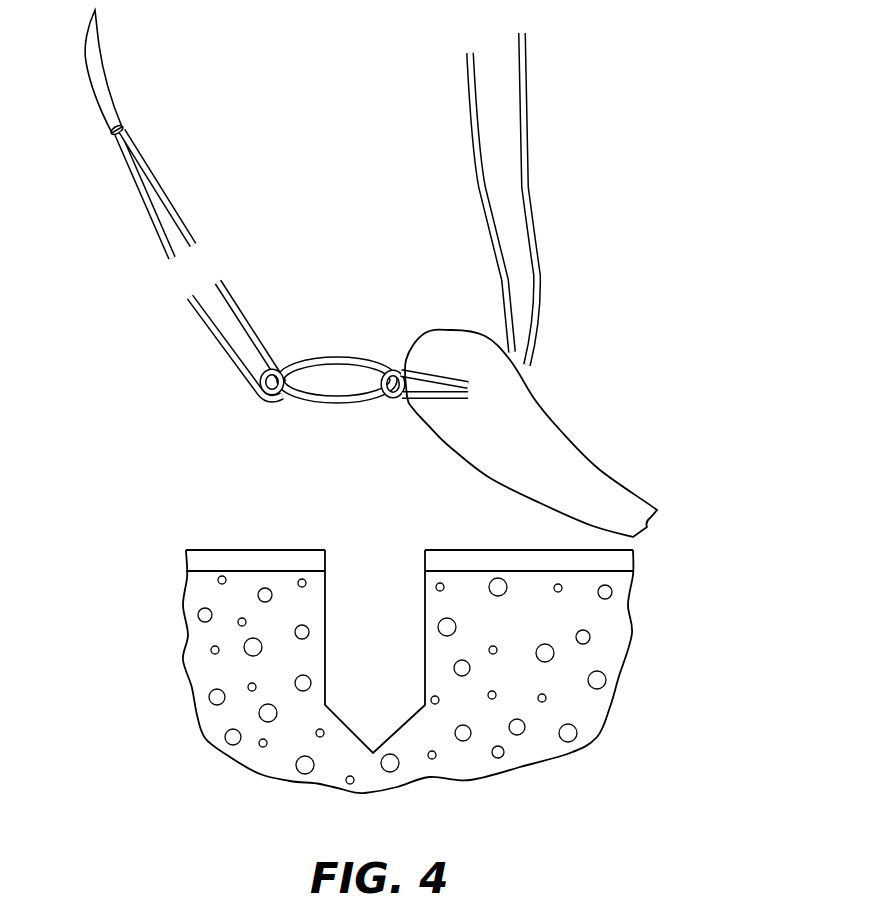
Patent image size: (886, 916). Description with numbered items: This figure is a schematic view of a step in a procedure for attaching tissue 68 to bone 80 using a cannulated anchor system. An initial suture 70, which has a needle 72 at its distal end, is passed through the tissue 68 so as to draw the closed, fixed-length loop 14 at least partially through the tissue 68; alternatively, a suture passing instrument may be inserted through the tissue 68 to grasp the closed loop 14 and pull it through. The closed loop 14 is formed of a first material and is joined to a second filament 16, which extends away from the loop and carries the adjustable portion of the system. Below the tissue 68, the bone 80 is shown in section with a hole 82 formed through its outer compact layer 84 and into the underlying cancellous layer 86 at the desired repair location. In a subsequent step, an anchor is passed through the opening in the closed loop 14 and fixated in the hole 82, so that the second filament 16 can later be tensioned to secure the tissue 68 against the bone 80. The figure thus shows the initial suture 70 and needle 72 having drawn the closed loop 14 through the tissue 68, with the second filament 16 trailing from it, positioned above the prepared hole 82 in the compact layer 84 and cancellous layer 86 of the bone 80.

The closed, fixed-length loop 14 is at (332, 355).
The second filament 16 is at (545, 190).
The tissue 68 is at (583, 452).
The initial suture 70 is at (190, 204).
The needle 72 is at (108, 80).
The bone 80 is at (165, 602).
The hole 82 is at (370, 555).
The compact layer 84 is at (620, 560).
The cancellous layer 86 is at (615, 647).